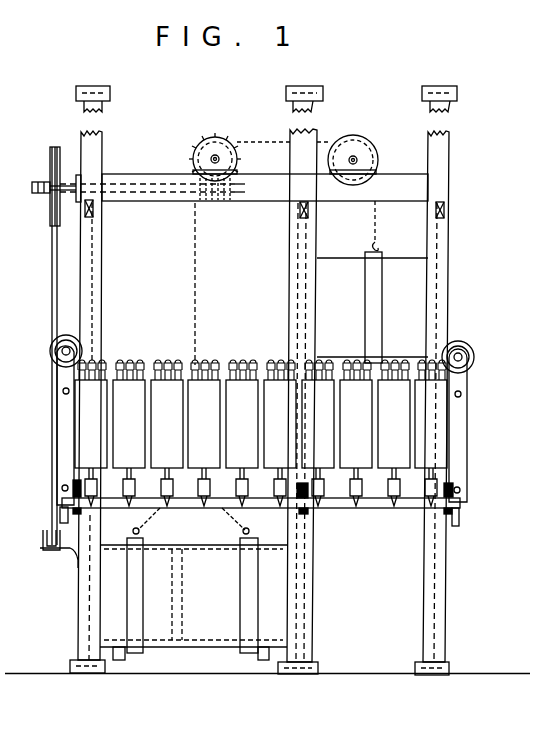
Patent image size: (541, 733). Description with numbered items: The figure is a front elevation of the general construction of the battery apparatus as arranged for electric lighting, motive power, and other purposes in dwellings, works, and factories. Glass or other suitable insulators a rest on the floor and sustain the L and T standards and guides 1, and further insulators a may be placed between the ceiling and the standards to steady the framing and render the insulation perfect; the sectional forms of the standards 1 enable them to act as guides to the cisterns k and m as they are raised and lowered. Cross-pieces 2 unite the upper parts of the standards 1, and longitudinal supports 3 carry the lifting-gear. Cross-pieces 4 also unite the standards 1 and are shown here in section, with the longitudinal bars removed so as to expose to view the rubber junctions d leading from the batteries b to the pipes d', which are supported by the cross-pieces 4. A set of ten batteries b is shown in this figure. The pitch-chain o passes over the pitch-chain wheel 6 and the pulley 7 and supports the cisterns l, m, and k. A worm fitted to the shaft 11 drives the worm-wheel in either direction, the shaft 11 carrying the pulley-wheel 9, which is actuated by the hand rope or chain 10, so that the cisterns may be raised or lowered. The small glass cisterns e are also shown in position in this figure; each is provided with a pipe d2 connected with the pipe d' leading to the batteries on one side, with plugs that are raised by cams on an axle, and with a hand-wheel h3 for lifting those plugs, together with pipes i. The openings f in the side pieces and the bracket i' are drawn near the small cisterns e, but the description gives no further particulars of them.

The standards and guides 1 is at (263, 395).
The insulators a is at (263, 381).
The cross-pieces 2 is at (94, 210).
The longitudinal supports 3 is at (239, 188).
The shaft 11 is at (140, 188).
The pulley-wheel 9 is at (50, 165).
The hand rope or chain 10 is at (47, 346).
The pitch-chain wheel 6 is at (215, 136).
The pulley 7 is at (353, 140).
The pitch-chain o is at (240, 283).
The cistern k is at (372, 307).
The glass cisterns e is at (262, 425).
The hand-wheel h3 is at (258, 351).
The pivot holes f is at (62, 391).
The pipes i is at (43, 537).
The bracket i' is at (462, 524).
The batteries b is at (261, 414).
The rubber junctions d is at (261, 487).
The pipes d' is at (293, 502).
The pipe d2 is at (508, 490).
The cross-pieces 4 is at (76, 514).
The cistern l is at (134, 580).
The cistern m is at (193, 584).